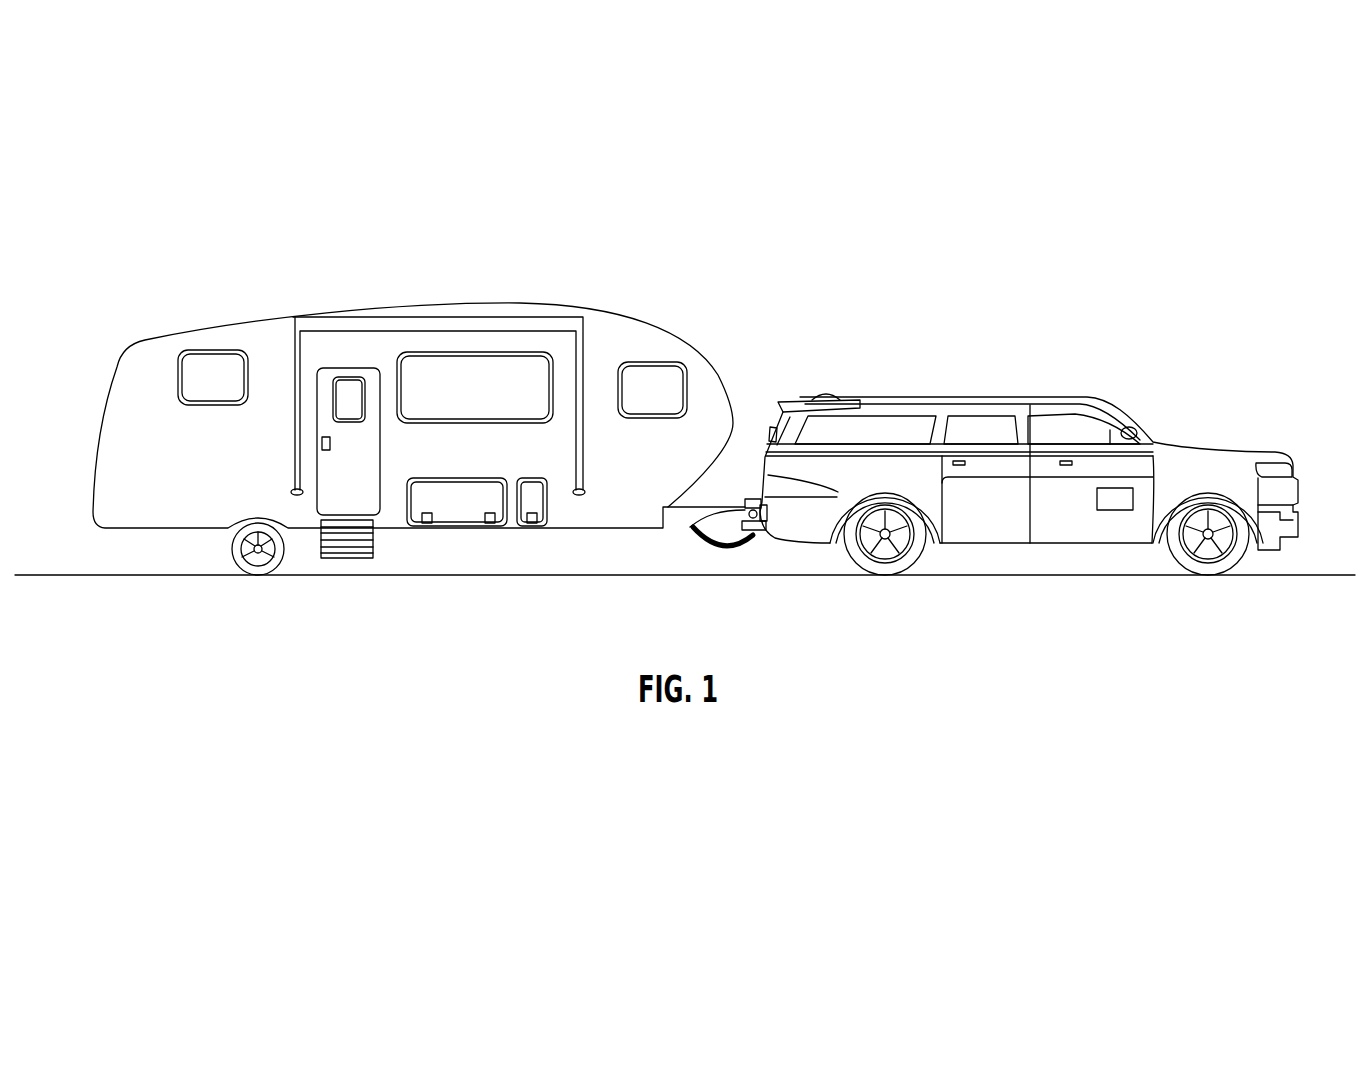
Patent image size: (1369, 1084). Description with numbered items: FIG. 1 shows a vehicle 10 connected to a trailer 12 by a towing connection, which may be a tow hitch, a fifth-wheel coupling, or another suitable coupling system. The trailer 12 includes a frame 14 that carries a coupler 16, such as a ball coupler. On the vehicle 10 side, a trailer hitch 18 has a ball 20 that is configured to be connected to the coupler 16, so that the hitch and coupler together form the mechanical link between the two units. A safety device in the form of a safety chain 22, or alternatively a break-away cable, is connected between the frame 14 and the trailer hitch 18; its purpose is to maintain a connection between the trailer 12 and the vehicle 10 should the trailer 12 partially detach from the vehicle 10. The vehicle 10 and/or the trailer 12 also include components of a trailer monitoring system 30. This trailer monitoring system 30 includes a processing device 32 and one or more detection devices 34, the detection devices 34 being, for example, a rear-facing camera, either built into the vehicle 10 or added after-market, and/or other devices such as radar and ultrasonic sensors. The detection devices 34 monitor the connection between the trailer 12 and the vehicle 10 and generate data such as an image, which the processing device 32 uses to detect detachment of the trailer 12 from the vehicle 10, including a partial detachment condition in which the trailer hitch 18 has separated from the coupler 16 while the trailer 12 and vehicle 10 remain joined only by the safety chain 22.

The vehicle 10 is at (920, 397).
The trailer 12 is at (215, 333).
The frame 14 is at (683, 517).
The coupler 16 is at (755, 502).
The trailer hitch 18 is at (780, 535).
The ball 20 is at (778, 517).
The safety chain 22 is at (732, 547).
The trailer monitoring system 30 is at (1057, 334).
The processing device 32 is at (1113, 500).
The detection devices 34 is at (766, 431).